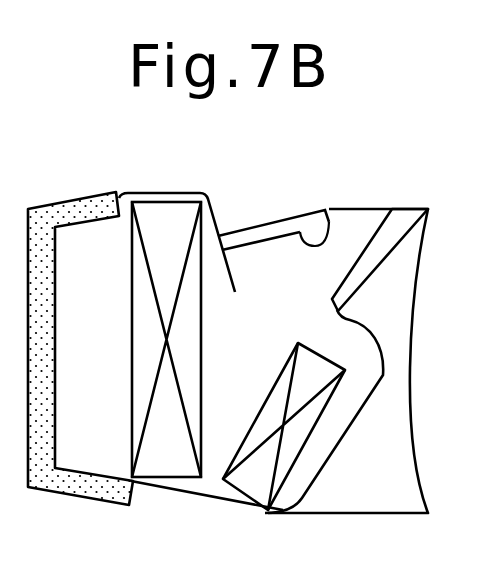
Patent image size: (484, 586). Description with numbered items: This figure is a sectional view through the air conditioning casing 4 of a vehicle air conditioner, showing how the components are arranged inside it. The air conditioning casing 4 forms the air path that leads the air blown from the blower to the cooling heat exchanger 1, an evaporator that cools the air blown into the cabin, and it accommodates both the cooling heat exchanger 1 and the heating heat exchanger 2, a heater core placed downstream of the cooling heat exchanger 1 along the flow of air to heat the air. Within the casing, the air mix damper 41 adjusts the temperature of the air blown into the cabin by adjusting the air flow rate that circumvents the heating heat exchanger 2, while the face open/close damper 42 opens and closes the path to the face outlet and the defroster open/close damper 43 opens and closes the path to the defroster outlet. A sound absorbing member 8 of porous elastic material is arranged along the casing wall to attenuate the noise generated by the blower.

The cooling heat exchanger 1 is at (180, 220).
The heating heat exchanger 2 is at (325, 365).
The air conditioning casing 4 is at (128, 191).
The sound absorbing member 8 is at (44, 214).
The air mix damper 41 is at (242, 441).
The face open/close damper 42 is at (393, 208).
The defroster open/close damper 43 is at (329, 222).